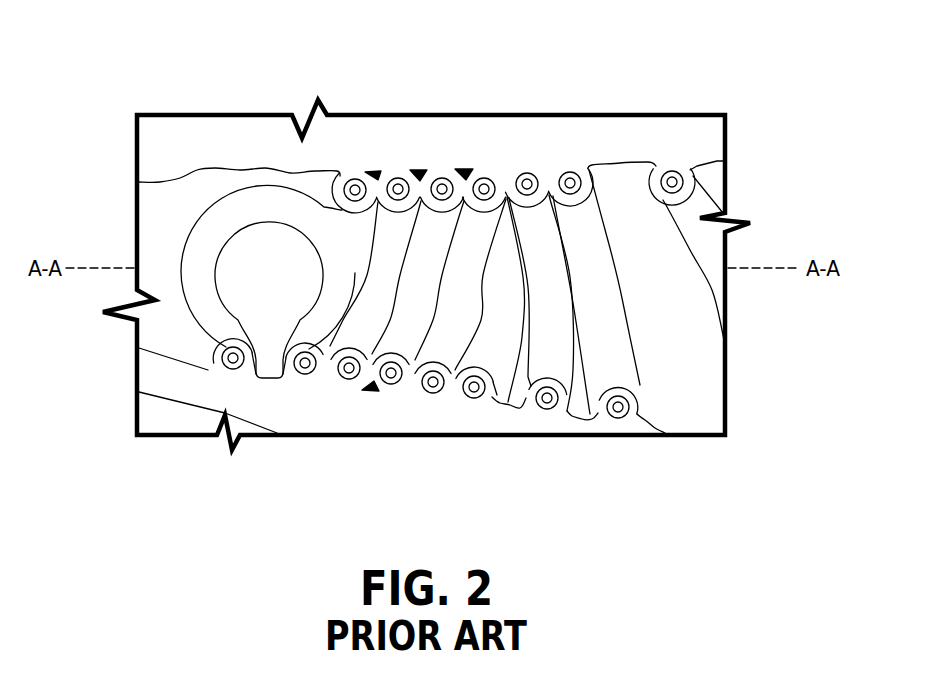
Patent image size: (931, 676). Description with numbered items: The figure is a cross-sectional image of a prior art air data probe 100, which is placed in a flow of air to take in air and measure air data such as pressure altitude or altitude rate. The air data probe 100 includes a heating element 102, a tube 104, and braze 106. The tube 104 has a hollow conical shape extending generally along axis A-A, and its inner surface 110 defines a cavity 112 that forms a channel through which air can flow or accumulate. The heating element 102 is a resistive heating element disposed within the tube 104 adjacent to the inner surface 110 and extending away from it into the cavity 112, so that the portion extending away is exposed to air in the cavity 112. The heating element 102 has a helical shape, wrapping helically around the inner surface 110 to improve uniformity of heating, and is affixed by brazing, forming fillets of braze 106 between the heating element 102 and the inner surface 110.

The air data probe 100 is at (229, 88).
The heating element 102 is at (441, 176).
The tube 104 is at (403, 418).
The braze 106 is at (555, 172).
The inner surface 110 is at (628, 150).
The cavity 112 is at (519, 303).